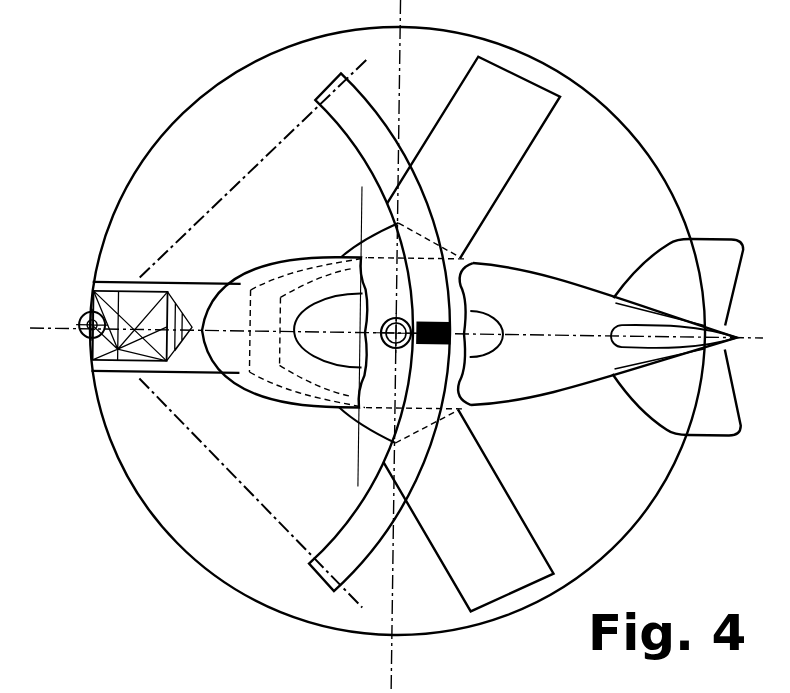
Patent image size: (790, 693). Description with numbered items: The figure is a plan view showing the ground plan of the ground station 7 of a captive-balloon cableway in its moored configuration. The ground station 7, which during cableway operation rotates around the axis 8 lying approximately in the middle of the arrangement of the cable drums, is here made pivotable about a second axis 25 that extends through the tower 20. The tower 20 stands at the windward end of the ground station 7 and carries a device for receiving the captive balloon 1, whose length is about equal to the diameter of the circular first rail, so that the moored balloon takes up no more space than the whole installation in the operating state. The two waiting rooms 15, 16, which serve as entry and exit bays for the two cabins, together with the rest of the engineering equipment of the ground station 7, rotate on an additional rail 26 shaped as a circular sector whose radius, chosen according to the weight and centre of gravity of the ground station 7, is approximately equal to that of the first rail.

The captive balloon 1 is at (522, 285).
The ground station 7 is at (142, 508).
The axis 8 is at (417, 340).
The waiting room 15 is at (512, 558).
The waiting room 16 is at (495, 103).
The tower 20 is at (133, 285).
The axis 25 is at (90, 320).
The additional rail 26 is at (368, 138).